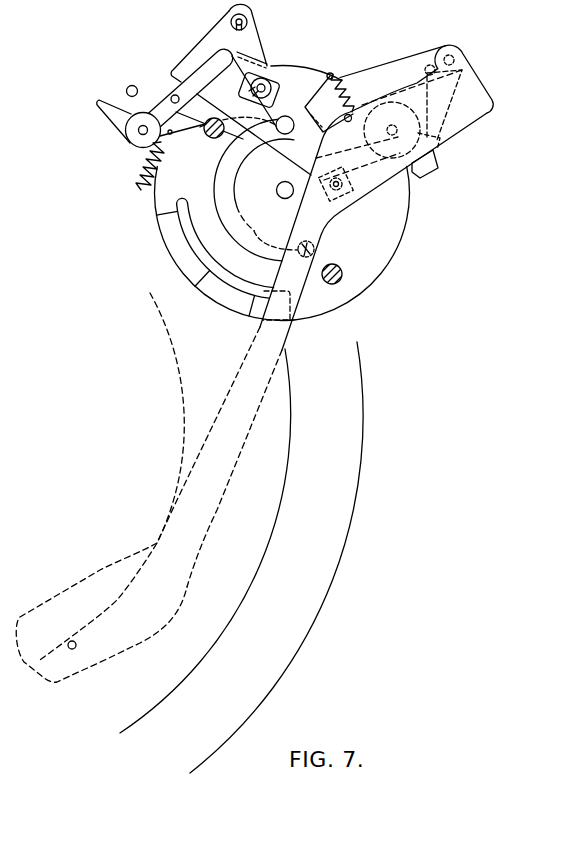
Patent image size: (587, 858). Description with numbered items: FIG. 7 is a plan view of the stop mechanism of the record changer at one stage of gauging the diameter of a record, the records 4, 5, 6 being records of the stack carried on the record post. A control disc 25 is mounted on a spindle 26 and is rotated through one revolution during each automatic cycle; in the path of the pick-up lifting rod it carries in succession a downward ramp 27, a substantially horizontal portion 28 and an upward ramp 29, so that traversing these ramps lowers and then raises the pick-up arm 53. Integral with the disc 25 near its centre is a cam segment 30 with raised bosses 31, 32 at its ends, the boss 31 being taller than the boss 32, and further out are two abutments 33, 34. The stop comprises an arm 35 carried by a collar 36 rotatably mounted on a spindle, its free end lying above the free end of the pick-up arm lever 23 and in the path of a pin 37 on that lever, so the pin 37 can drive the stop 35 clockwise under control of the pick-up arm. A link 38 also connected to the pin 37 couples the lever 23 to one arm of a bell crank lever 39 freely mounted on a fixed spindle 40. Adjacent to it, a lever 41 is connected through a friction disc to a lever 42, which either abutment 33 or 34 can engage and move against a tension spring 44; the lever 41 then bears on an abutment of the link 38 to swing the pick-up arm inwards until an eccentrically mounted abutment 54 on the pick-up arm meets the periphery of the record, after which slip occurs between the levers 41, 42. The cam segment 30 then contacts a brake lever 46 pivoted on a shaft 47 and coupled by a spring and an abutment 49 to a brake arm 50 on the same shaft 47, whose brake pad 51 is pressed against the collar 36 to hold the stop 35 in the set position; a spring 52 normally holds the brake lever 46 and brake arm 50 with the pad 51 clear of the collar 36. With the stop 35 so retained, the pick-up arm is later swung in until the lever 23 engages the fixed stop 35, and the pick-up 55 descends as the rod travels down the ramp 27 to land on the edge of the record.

The record 4 is at (181, 380).
The record 5 is at (292, 450).
The record 6 is at (366, 450).
The pick-up arm lever 23 is at (358, 184).
The disc 25 is at (388, 258).
The spindle 26 is at (273, 191).
The downward ramp 27 is at (165, 235).
The horizontal portion 28 is at (214, 293).
The upward ramp 29 is at (275, 314).
The cam segment 30 is at (247, 235).
The boss 31 is at (305, 257).
The boss 32 is at (288, 117).
The abutment 33 is at (212, 137).
The abutment 34 is at (343, 270).
The stop 35 is at (370, 166).
The collar 36 is at (395, 147).
The pin 37 is at (335, 191).
The link 38 is at (277, 142).
The bell crank lever 39 is at (213, 38).
The spindle 40 is at (260, 17).
The lever 41 is at (156, 106).
The lever 42 is at (183, 121).
The tension spring 44 is at (144, 163).
The brake lever 46 is at (388, 72).
The shaft 47 is at (453, 57).
The abutment 49 is at (430, 65).
The brake arm 50 is at (441, 110).
The brake pad 51 is at (427, 173).
The spring 52 is at (342, 90).
The pick-up arm 53 is at (238, 439).
The abutment 54 is at (76, 647).
The pick-up 55 is at (60, 637).